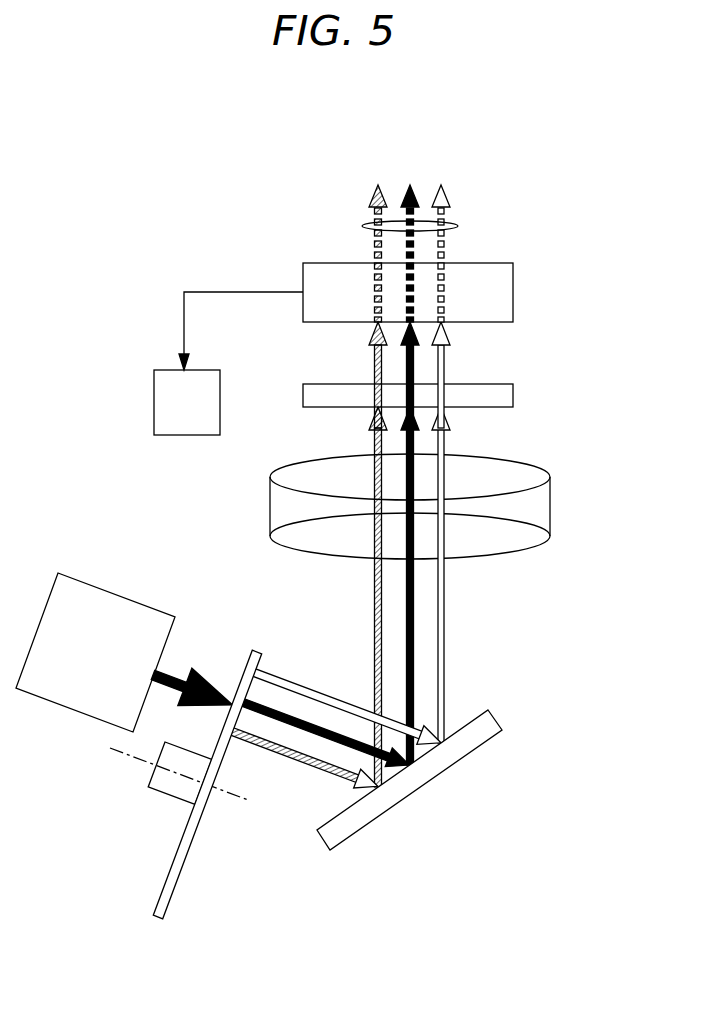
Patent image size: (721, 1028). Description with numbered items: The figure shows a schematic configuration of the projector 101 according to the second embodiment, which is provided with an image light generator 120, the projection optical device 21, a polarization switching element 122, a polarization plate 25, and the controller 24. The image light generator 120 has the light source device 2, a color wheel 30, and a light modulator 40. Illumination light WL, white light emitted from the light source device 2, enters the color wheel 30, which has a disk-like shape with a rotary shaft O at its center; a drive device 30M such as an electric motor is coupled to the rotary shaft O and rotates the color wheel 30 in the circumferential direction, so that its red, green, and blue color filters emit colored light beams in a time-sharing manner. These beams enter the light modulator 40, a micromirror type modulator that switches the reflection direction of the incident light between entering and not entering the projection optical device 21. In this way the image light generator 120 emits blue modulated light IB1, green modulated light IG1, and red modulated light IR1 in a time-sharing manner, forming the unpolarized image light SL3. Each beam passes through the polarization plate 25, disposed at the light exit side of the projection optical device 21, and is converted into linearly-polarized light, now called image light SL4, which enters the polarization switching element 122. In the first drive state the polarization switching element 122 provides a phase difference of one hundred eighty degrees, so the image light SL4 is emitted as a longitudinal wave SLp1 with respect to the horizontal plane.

The projector 101 is at (508, 163).
The polarization switching element 122 is at (513, 280).
The controller 24 is at (220, 395).
The polarization plate 25 is at (508, 395).
The projection optical device 21 is at (520, 552).
The light source device 2 is at (112, 598).
The illumination light WL is at (176, 680).
The color wheel 30 is at (168, 915).
The drive device 30M is at (170, 792).
The rotary shaft O is at (233, 795).
The light modulator 40 is at (445, 770).
The image light generator 120 is at (478, 832).
The red modulated light IR1 is at (381, 348).
The green modulated light IG1 is at (444, 357).
The blue modulated light IB1 is at (413, 372).
The image light SL3 is at (532, 592).
The image light SL4 is at (582, 305).
The longitudinal wave SLp1 is at (448, 227).